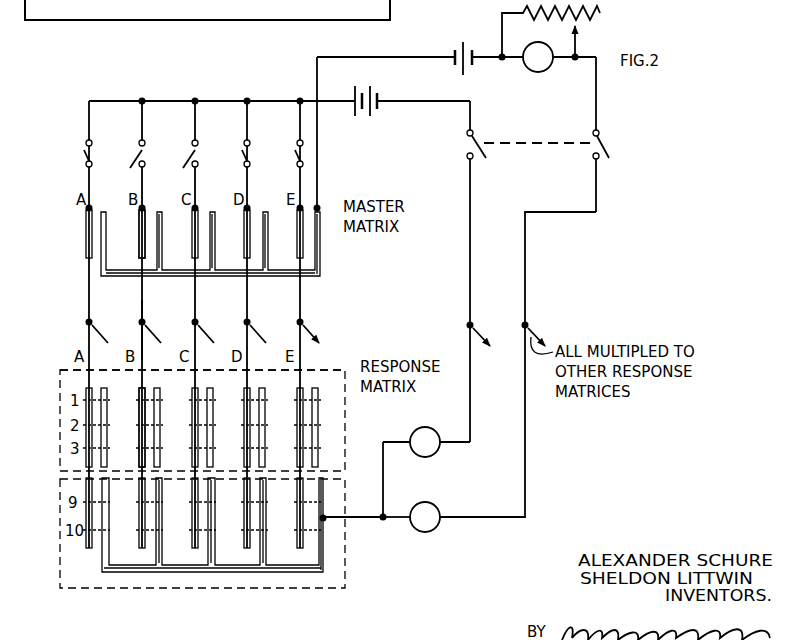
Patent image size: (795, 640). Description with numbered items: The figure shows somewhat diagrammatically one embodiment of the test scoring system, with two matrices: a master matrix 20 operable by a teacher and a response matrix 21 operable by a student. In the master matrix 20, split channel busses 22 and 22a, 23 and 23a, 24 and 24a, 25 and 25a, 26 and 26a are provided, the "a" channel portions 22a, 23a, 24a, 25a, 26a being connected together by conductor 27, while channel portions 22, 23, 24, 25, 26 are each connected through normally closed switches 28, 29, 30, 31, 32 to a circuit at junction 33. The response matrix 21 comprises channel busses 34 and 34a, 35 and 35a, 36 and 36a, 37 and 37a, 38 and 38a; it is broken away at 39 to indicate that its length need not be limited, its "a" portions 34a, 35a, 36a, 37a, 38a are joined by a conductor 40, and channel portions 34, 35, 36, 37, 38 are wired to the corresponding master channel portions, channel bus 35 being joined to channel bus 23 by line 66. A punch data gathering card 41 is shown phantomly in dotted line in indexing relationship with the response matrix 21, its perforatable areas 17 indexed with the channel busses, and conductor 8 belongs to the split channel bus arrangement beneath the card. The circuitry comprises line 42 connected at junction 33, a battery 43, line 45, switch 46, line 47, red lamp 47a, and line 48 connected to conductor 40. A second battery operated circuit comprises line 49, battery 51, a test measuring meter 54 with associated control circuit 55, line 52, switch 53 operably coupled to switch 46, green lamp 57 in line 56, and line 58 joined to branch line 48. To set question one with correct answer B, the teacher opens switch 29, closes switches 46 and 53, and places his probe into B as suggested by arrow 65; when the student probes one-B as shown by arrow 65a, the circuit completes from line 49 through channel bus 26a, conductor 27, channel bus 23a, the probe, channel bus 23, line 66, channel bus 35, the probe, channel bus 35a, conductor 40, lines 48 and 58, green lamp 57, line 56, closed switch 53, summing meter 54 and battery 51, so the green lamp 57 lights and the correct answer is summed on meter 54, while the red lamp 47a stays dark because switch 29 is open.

The conductor 8 is at (207, 10).
The perforatable areas 17 is at (103, 400).
The master matrix 20 is at (80, 117).
The response matrix 21 is at (94, 352).
The channel portion 22 is at (86, 220).
The channel portion 23 is at (139, 218).
The channel portion 24 is at (192, 218).
The channel portion 25 is at (244, 218).
The channel portion 26 is at (297, 218).
The split channel bus 22a is at (106, 262).
The split channel bus 23a is at (160, 262).
The split channel bus 24a is at (213, 262).
The split channel bus 25a is at (266, 262).
The split channel bus 26a is at (318, 255).
The conductor 27 is at (254, 277).
The normally closed switch 28 is at (86, 155).
The normally closed switch 29 is at (137, 157).
The normally closed switch 30 is at (190, 157).
The normally closed switch 31 is at (244, 156).
The normally closed switch 32 is at (297, 156).
The junction 33 is at (300, 99).
The channel bus 34 is at (86, 546).
The channel bus 35 is at (141, 482).
The channel bus 36 is at (194, 482).
The channel bus 37 is at (246, 482).
The channel bus 38 is at (298, 482).
The channel bus 34a is at (107, 551).
The channel bus 35a is at (162, 557).
The channel bus 36a is at (213, 555).
The channel bus 37a is at (265, 551).
The channel bus 38a is at (318, 557).
The break-away 39 is at (60, 479).
The conductor 40 is at (292, 573).
The punch data gathering card 41 is at (58, 432).
The line 42 is at (314, 72).
The battery 43 is at (373, 93).
The line 45 is at (474, 122).
The switch 46 is at (468, 143).
The line 47 is at (468, 316).
The red lamp 47a is at (417, 430).
The line 48 is at (368, 508).
The line 49 is at (385, 57).
The battery 51 is at (476, 70).
The line 52 is at (596, 100).
The switch 53 is at (607, 146).
The test measuring meter 54 is at (540, 72).
The control circuit 55 is at (508, 33).
The line 56 is at (527, 503).
The green lamp 57 is at (438, 505).
The line 58 is at (393, 515).
The arrow 65 is at (153, 233).
The arrow 65a is at (176, 358).
The line 66 is at (145, 308).